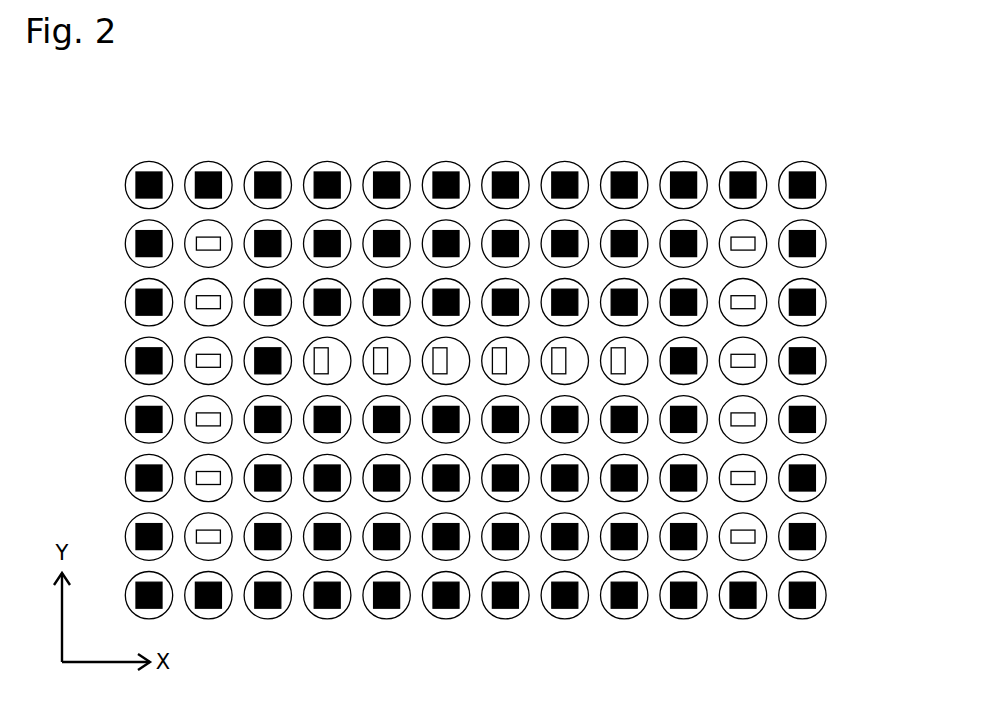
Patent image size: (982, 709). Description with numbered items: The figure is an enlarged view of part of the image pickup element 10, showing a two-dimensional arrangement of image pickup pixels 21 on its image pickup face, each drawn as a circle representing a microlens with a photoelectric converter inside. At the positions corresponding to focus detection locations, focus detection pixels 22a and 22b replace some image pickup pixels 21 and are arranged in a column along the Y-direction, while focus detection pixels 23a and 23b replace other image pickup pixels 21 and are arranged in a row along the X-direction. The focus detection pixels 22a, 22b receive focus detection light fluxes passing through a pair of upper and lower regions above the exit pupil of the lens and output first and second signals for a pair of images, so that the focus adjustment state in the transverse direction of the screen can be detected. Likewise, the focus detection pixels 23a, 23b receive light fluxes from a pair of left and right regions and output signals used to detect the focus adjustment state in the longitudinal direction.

The image pickup element 10 is at (820, 135).
The image pickup pixel 21 is at (161, 165).
The focus detection pixel 22a is at (191, 227).
The focus detection pixel 22b is at (191, 285).
The focus detection pixel 23a is at (341, 338).
The focus detection pixel 23b is at (401, 338).